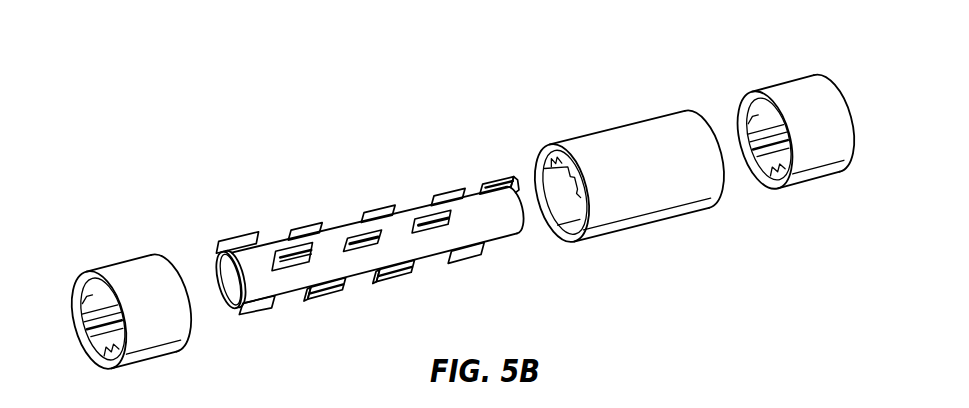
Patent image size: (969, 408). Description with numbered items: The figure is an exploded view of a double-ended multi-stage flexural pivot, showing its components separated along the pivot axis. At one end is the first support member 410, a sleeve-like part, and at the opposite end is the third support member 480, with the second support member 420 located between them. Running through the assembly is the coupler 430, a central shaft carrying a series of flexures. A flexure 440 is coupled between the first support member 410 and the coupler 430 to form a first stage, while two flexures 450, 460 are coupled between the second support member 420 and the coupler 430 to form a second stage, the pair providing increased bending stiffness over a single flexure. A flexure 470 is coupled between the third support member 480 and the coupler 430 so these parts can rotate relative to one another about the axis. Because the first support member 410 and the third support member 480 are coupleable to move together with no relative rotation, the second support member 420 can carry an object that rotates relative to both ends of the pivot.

The first support member 410 is at (128, 270).
The second support member 420 is at (608, 140).
The coupler 430 is at (407, 217).
The flexure 440 is at (263, 293).
The flexure 450 is at (334, 278).
The flexure 460 is at (405, 259).
The flexure 470 is at (481, 235).
The third support member 480 is at (798, 90).